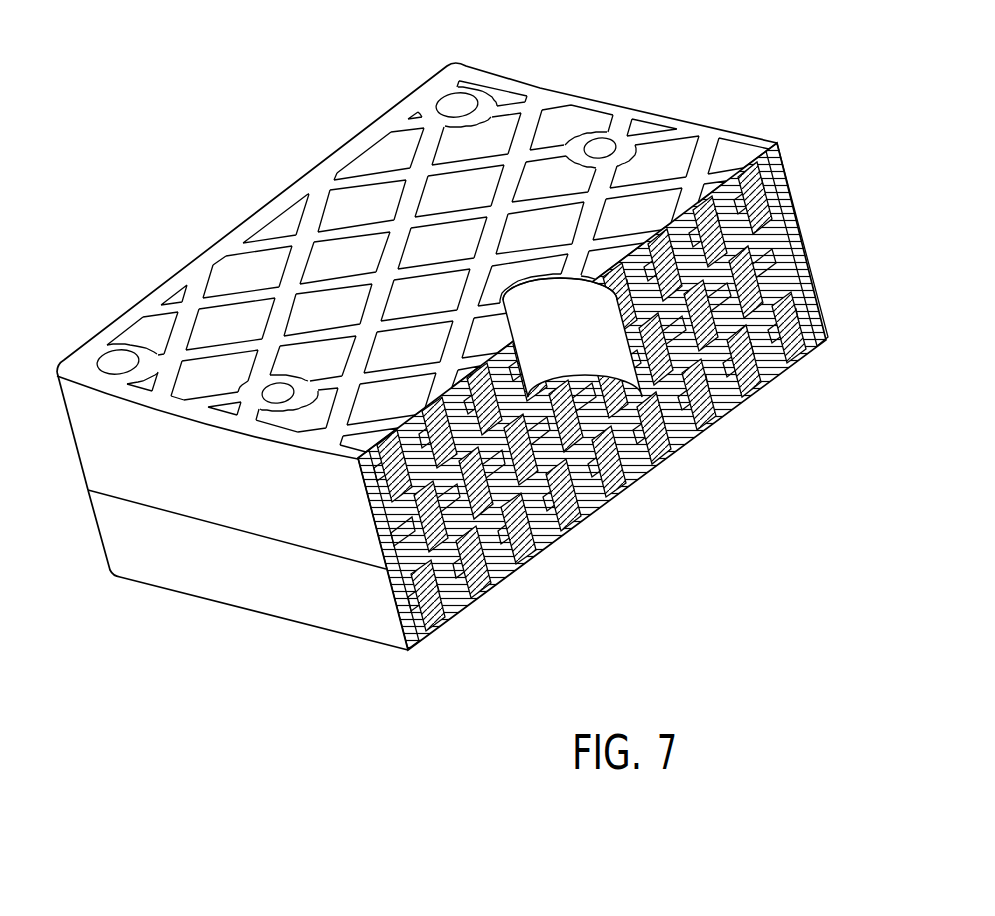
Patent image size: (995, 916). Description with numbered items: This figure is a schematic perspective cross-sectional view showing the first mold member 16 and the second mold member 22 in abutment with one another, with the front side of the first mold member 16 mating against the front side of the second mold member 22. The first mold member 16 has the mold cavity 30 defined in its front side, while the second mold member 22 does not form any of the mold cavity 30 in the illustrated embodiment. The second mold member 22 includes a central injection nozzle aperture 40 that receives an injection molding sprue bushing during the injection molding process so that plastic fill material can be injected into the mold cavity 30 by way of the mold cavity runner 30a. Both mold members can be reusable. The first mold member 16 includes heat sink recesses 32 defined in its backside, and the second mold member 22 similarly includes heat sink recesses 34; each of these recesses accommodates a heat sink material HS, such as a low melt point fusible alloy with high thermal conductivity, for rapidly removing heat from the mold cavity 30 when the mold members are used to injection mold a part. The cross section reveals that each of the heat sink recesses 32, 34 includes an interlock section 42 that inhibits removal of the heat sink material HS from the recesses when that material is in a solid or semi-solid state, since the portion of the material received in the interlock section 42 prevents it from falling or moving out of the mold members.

The first mold member 16 is at (263, 583).
The second mold member 22 is at (97, 438).
The mold cavity 30 is at (728, 345).
The mold cavity runner 30a is at (594, 407).
The heat sink recesses 32 is at (562, 503).
The heat sink recesses 34 is at (283, 197).
The central injection nozzle aperture 40 is at (527, 300).
The interlock section 42 is at (793, 197).
The heat sink material HS is at (350, 441).